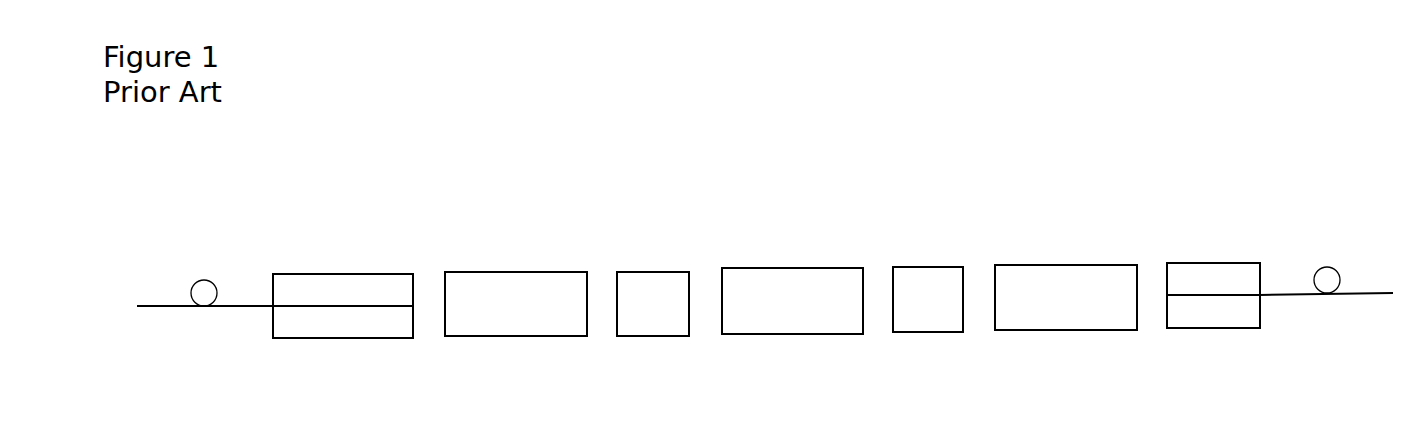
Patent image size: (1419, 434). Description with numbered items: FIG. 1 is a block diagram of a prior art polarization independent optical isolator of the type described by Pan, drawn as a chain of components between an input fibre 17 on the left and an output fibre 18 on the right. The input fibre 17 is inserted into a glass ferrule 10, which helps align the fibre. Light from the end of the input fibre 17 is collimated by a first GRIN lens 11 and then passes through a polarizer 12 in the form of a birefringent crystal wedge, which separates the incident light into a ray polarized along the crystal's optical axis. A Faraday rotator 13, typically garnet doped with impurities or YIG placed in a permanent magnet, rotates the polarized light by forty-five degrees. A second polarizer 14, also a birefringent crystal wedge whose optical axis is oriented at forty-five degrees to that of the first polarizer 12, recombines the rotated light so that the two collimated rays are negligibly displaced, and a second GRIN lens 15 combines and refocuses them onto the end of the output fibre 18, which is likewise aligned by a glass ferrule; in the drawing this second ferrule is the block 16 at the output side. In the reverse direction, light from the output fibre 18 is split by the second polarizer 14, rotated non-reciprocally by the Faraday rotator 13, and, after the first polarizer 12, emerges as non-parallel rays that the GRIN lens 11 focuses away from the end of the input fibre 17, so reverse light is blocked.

The glass ferrule 10 is at (358, 274).
The first GRIN lens 11 is at (533, 272).
The polarizer 12 is at (633, 272).
The Faraday rotator 13 is at (808, 268).
The second polarizer 14 is at (918, 267).
The second GRIN lens 15 is at (1079, 265).
The optical component 16 is at (1208, 263).
The input fibre 17 is at (240, 308).
The output fibre 18 is at (1370, 292).